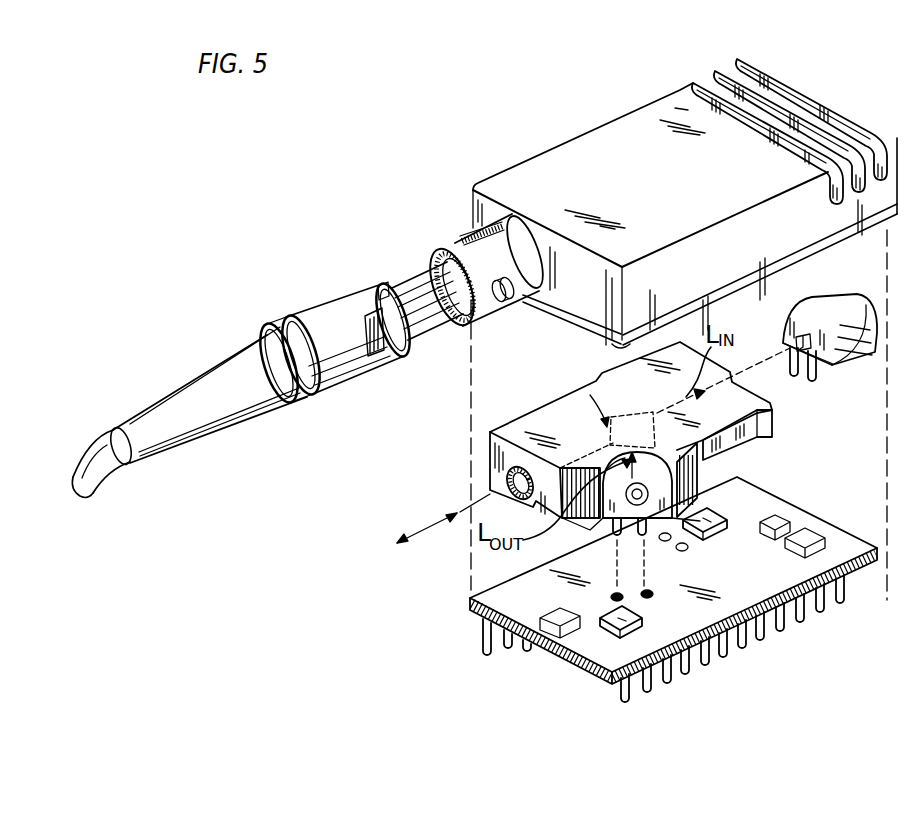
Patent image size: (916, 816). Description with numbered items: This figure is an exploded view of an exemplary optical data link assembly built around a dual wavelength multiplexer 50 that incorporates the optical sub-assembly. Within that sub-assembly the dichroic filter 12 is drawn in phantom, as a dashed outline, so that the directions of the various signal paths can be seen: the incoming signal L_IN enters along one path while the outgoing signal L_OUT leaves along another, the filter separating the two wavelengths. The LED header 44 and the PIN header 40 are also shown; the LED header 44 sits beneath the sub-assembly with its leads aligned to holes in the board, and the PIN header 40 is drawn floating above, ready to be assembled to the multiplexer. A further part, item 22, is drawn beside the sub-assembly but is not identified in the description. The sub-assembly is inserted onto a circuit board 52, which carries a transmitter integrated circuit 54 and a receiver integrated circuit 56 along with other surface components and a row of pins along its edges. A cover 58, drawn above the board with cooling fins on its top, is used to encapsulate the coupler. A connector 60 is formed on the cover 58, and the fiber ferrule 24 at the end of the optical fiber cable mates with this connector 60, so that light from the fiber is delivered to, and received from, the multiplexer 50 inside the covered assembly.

The dichroic filter 12 is at (587, 390).
The mounting bracket 22 is at (700, 476).
The fiber ferrule 24 is at (323, 312).
The PIN header 40 is at (847, 314).
The LED header 44 is at (644, 516).
The dual wavelength multiplexer 50 is at (341, 457).
The circuit board 52 is at (842, 550).
The transmitter integrated circuit 54 is at (612, 628).
The receiver integrated circuit 56 is at (722, 518).
The cover 58 is at (609, 138).
The connector 60 is at (456, 243).